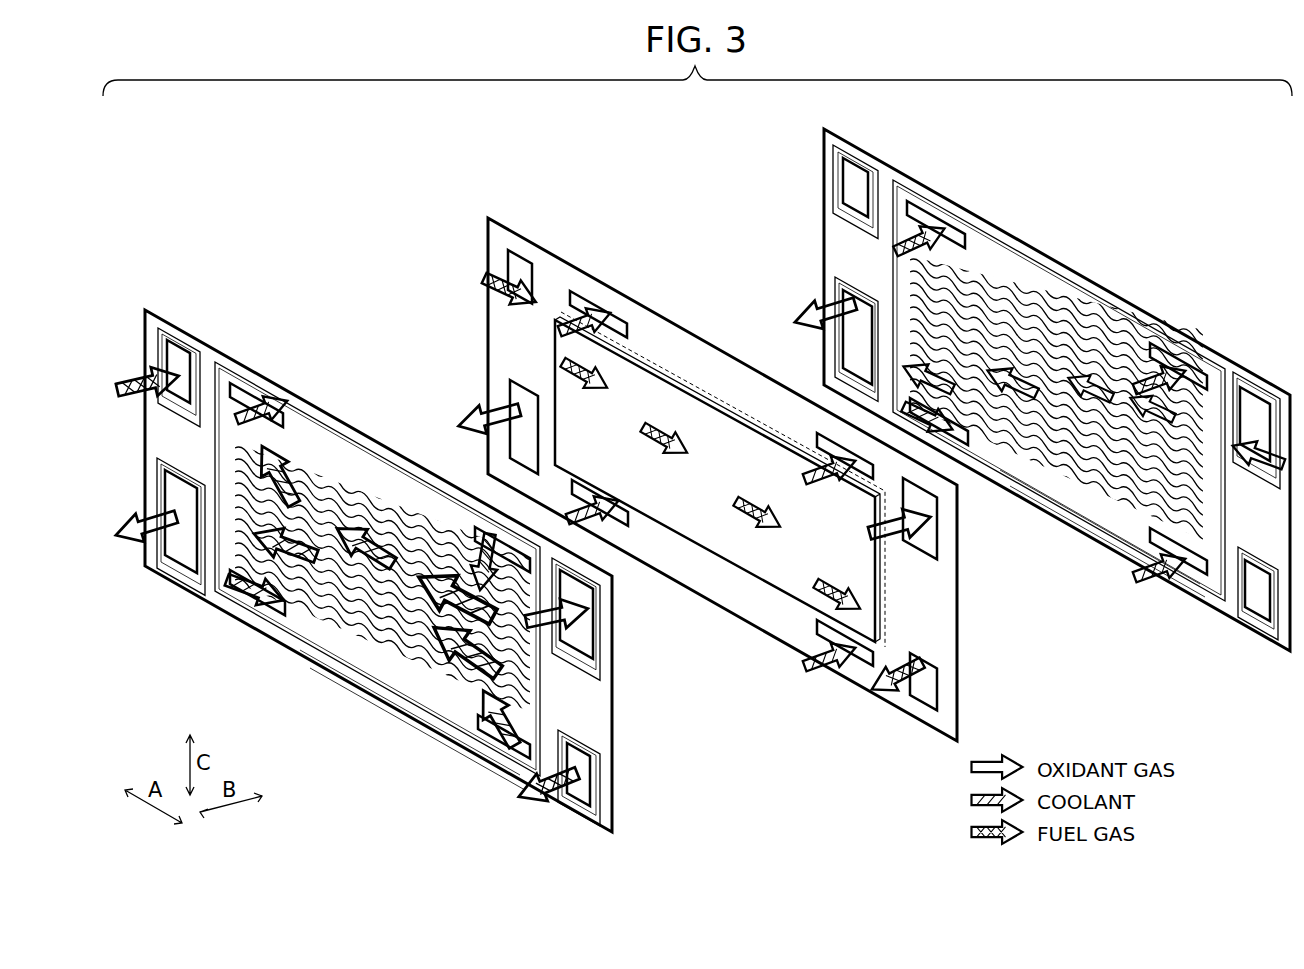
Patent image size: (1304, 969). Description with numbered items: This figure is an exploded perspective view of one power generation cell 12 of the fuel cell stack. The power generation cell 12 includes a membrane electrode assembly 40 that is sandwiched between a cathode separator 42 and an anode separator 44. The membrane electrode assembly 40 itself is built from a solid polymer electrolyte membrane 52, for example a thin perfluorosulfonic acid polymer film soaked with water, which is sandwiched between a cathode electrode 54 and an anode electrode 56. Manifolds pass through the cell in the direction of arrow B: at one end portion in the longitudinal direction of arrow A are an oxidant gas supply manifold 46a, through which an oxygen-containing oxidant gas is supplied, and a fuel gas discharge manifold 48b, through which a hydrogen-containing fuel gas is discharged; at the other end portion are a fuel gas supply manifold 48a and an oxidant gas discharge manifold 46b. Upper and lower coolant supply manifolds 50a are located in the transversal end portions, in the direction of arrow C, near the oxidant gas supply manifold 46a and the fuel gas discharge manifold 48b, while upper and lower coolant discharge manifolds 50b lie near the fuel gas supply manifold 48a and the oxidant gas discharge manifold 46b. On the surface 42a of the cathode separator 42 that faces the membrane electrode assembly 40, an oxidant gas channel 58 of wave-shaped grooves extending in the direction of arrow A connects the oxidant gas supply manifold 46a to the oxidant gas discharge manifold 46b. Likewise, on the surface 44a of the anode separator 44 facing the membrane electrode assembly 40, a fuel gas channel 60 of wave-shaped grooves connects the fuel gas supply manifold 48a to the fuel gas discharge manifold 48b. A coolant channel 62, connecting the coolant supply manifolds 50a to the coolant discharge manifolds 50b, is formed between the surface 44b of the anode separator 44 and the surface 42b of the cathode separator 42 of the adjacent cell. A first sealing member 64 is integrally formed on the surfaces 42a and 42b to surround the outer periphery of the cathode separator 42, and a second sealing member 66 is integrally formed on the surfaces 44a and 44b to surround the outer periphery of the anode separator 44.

The power generation cell 12 is at (378, 208).
The membrane electrode assembly 40 is at (487, 215).
The cathode separator 42 is at (822, 128).
The surface of the cathode separator 42a is at (1075, 512).
The surface of the cathode separator 42b is at (1100, 513).
The anode separator 44 is at (144, 307).
The surface of the anode separator 44a is at (438, 715).
The surface of the anode separator 44b is at (415, 705).
The oxidant gas supply manifold 46a is at (590, 637).
The oxidant gas discharge manifold 46b is at (180, 548).
The fuel gas supply manifold 48a is at (177, 357).
The fuel gas discharge manifold 48b is at (586, 770).
The coolant supply manifold 50a is at (467, 525).
The coolant discharge manifold 50b is at (258, 395).
The solid polymer electrolyte membrane 52 is at (945, 603).
The cathode electrode 54 is at (676, 372).
The anode electrode 56 is at (765, 570).
The oxidant gas channel 58 is at (1068, 345).
The fuel gas channel 60 is at (330, 487).
The coolant channel 62 is at (400, 637).
The first sealing member 64 is at (1003, 283).
The second sealing member 66 is at (225, 378).